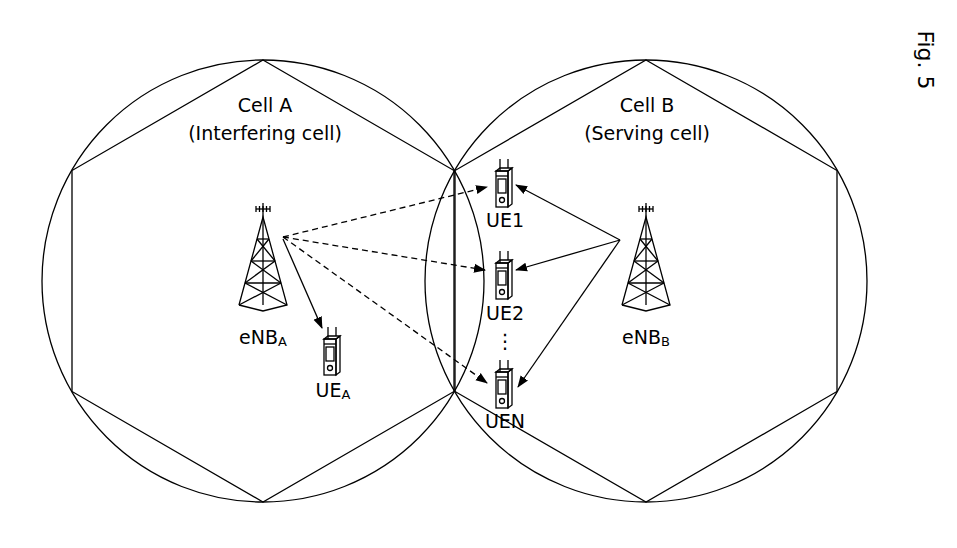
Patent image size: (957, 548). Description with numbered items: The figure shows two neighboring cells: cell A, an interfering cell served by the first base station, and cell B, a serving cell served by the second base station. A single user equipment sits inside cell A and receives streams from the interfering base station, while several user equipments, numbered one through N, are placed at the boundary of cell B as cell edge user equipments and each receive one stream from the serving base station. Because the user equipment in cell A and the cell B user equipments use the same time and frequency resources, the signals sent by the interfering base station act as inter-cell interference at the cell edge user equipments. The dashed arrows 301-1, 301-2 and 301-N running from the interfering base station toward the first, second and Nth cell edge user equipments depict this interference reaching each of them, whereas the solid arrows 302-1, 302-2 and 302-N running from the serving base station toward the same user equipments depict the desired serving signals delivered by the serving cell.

The interference signal from eNB A to UE1 301-1 is at (342, 222).
The interference signal from eNB A to UE2 301-2 is at (392, 256).
The interference signal from eNB A to UEN 301-N is at (397, 318).
The serving signal from eNB B to UE1 302-1 is at (565, 211).
The serving signal from eNB B to UE2 302-2 is at (540, 263).
The serving signal from eNB B to UEN 302-N is at (569, 314).